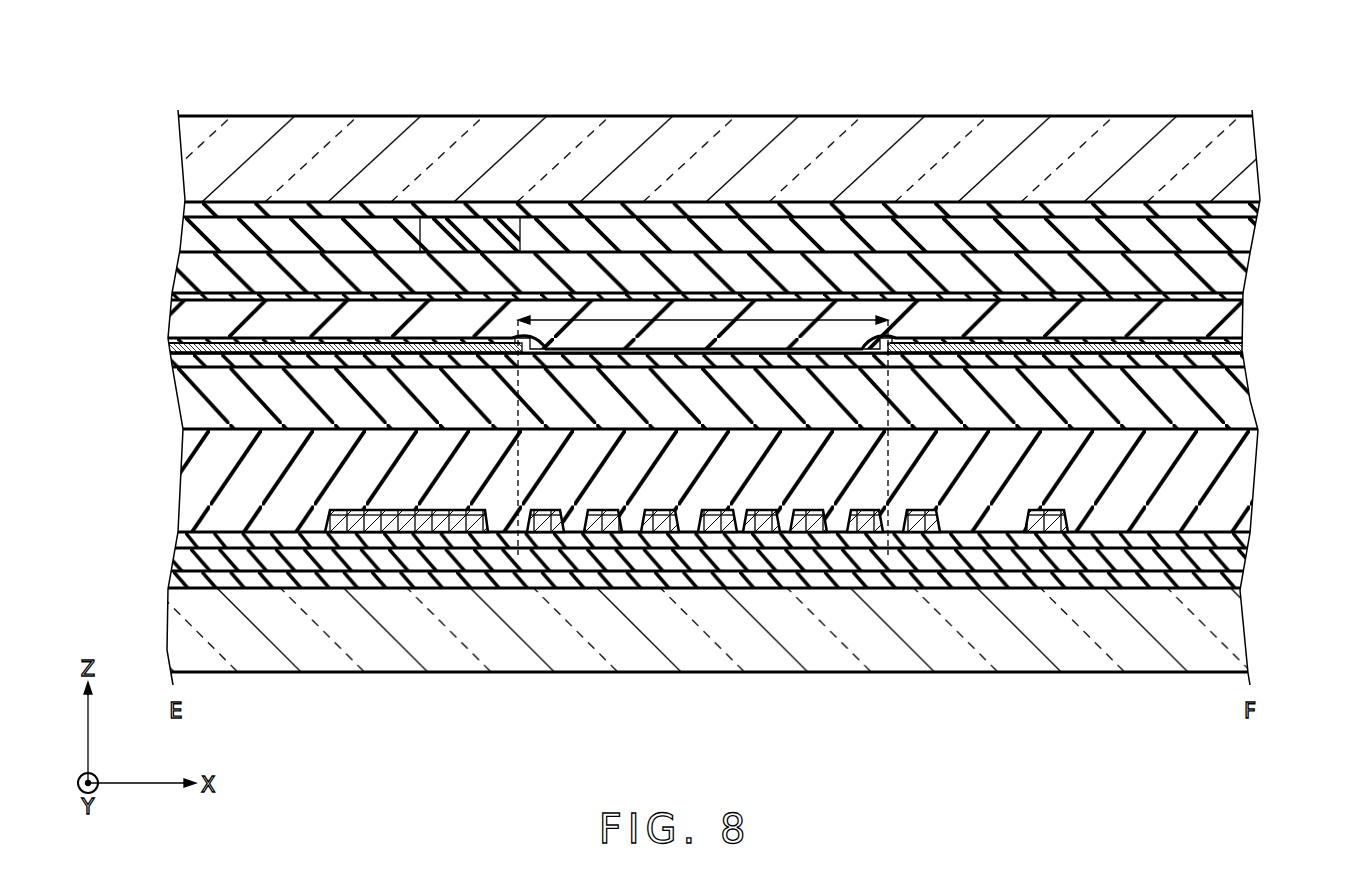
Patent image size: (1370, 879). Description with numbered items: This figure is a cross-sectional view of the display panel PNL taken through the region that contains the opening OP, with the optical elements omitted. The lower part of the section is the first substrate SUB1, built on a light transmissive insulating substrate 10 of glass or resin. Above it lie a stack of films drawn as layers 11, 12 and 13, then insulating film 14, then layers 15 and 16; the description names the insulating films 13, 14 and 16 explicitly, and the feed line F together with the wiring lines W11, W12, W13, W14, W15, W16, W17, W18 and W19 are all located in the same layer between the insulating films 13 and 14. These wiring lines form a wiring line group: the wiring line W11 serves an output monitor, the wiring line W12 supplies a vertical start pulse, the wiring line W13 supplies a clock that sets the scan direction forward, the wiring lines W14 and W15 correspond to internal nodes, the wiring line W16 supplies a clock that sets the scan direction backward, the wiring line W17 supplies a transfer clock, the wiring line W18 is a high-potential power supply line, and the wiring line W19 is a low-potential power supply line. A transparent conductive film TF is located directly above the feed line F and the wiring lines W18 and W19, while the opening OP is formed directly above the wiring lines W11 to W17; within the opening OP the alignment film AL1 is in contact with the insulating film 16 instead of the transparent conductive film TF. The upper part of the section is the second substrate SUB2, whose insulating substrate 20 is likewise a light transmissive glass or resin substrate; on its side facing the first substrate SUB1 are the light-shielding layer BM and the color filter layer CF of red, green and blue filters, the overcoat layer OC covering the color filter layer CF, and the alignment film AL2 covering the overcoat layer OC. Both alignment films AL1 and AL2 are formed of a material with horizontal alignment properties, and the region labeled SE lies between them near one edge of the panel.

The display panel PNL is at (1133, 72).
The first substrate SUB1 is at (1263, 515).
The second substrate SUB2 is at (1263, 140).
The insulating substrate 10 is at (197, 628).
The first insulating film 11 is at (179, 578).
The second insulating film 12 is at (184, 558).
The insulating film 13 is at (188, 535).
The insulating film 14 is at (197, 482).
The fifth insulating film 15 is at (197, 407).
The insulating film 16 is at (206, 360).
The transparent conductive film TF is at (218, 349).
The alignment film AL1 is at (190, 341).
The alignment film AL2 is at (186, 296).
The overcoat layer OC is at (196, 267).
The color filter layer CF is at (196, 233).
The light-shielding layer BM is at (200, 208).
The insulating substrate 20 is at (197, 159).
The sealant / liquid crystal layer region SE is at (1235, 325).
The opening OP is at (660, 320).
The feed line F is at (427, 530).
The wiring line W11 is at (546, 530).
The wiring line W12 is at (604, 530).
The wiring line W13 is at (661, 530).
The wiring line W14 is at (717, 530).
The wiring line W15 is at (762, 530).
The wiring line W16 is at (808, 530).
The wiring line W17 is at (865, 530).
The wiring line W18 is at (921, 530).
The wiring line W19 is at (1047, 530).